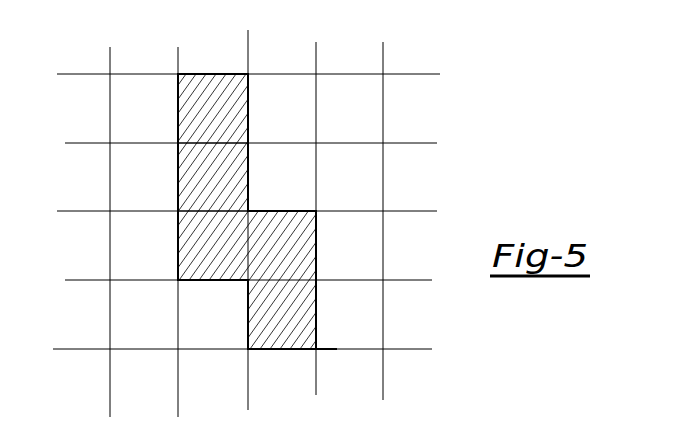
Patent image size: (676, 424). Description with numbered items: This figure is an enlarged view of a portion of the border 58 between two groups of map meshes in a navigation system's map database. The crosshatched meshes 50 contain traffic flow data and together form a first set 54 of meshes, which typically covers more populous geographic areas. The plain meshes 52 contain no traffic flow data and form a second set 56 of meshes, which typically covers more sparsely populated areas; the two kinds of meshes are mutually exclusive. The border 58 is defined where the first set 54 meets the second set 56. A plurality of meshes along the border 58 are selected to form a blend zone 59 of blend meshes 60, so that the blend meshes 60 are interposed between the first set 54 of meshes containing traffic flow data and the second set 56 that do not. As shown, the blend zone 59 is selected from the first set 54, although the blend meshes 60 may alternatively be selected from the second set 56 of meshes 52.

The meshes with traffic flow data 50 is at (215, 330).
The meshes without traffic flow data 52 is at (358, 183).
The first set of meshes 54 is at (83, 218).
The second set of meshes 56 is at (383, 187).
The border 58 is at (210, 74).
The blend zone 59 is at (168, 168).
The blend meshes 60 is at (258, 211).